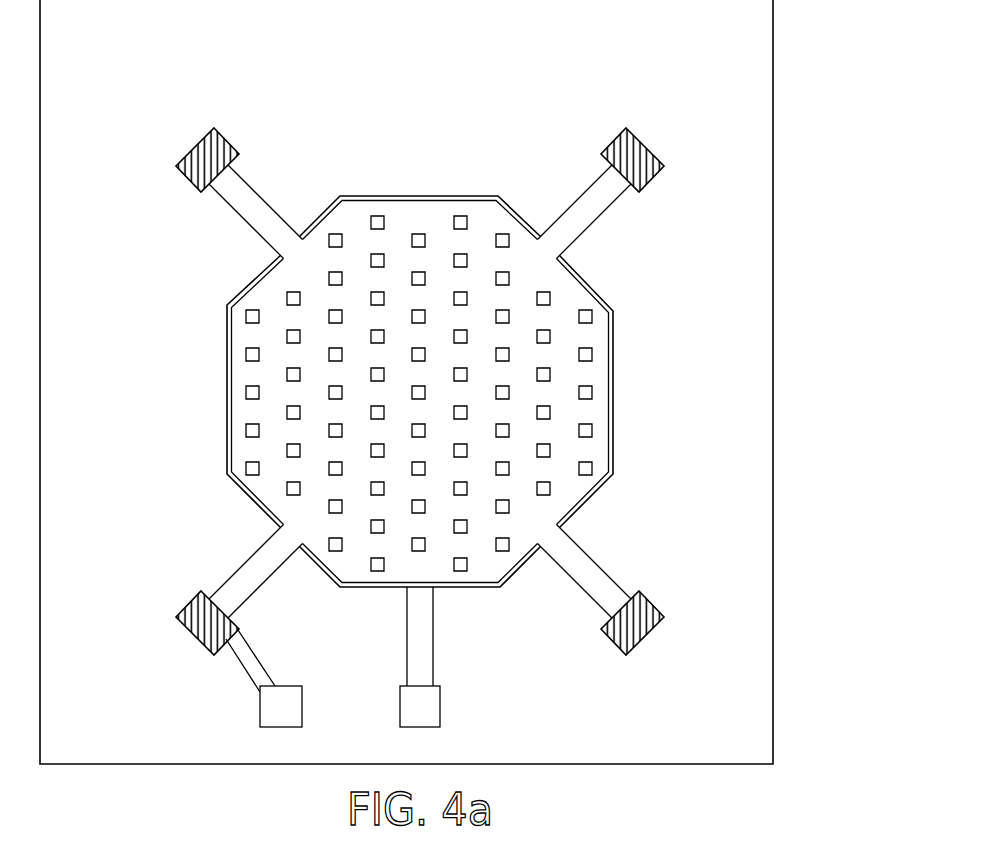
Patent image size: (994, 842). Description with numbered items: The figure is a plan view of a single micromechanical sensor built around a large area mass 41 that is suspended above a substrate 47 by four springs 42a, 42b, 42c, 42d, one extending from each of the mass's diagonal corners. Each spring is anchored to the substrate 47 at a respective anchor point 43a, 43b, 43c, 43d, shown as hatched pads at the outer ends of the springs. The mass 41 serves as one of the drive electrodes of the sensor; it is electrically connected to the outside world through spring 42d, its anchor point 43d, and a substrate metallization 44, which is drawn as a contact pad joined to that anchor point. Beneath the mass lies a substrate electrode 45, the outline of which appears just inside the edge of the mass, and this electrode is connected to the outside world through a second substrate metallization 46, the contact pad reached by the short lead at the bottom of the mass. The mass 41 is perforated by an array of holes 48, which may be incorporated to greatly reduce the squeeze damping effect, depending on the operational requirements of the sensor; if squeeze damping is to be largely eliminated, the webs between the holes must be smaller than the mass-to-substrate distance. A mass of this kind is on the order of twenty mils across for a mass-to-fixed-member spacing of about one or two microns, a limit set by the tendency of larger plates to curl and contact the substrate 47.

The large area mass 41 is at (593, 380).
The spring 42a is at (592, 576).
The spring 42b is at (576, 228).
The spring 42c is at (228, 229).
The spring 42d is at (245, 562).
The anchor point 43a is at (640, 630).
The anchor point 43b is at (642, 148).
The anchor point 43c is at (187, 148).
The anchor point 43d is at (193, 628).
The substrate metallization 44 is at (243, 683).
The substrate electrode 45 is at (227, 333).
The substrate metallization 46 is at (422, 702).
The substrate 47 is at (758, 392).
The holes 48 is at (588, 318).